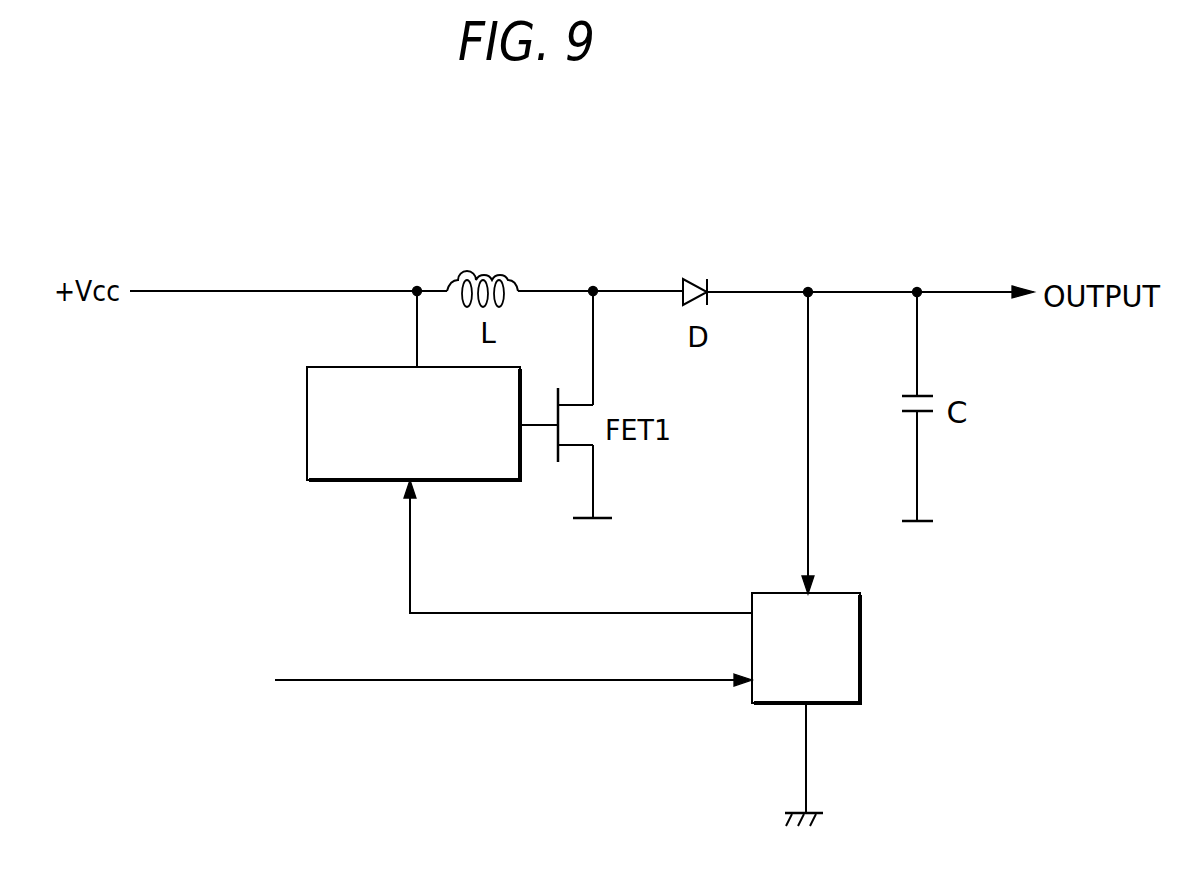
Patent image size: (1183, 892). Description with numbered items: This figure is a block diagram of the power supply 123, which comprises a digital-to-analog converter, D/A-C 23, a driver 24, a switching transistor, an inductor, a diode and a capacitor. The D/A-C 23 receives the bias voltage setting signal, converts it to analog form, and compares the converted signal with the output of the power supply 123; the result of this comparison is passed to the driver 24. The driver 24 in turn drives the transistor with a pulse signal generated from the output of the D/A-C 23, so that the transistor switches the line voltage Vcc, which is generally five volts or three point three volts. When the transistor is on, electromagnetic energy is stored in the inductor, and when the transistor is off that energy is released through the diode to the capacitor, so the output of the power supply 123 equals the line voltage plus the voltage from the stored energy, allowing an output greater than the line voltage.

The driver 24 is at (307, 420).
The digital-to-analog converter (D/A-C) 23 is at (860, 648).
The power supply 123 is at (530, 765).